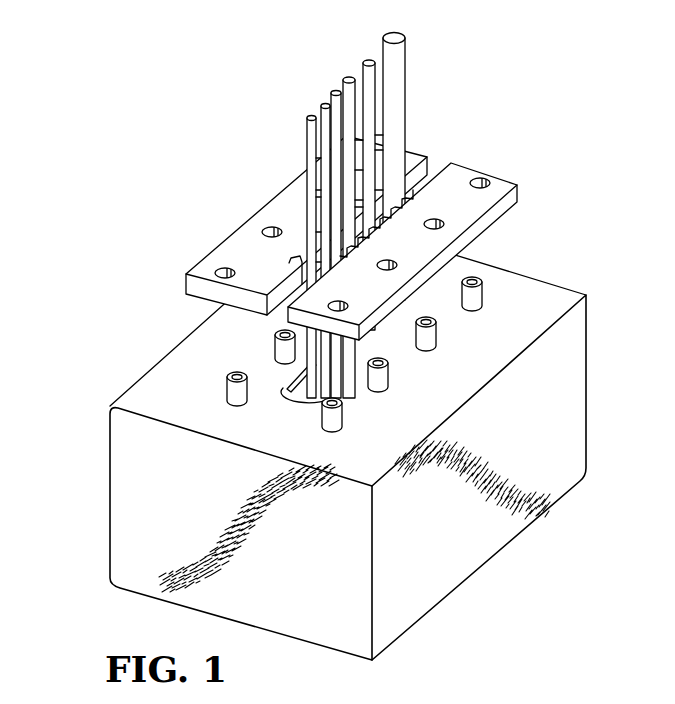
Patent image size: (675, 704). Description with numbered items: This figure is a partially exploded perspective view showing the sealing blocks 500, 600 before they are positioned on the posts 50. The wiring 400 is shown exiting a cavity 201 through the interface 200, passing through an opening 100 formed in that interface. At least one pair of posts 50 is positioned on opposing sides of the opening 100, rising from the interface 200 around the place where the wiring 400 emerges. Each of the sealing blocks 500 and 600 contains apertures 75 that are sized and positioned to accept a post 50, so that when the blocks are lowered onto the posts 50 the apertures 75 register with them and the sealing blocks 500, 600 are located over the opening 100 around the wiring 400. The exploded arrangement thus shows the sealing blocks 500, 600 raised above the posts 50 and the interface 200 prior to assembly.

The posts 50 is at (230, 384).
The apertures 75 is at (223, 268).
The opening 100 is at (297, 382).
The interface 200 is at (310, 437).
The cavity 201 is at (128, 460).
The wiring 400 is at (308, 104).
The sealing block 500 is at (497, 175).
The sealing block 600 is at (261, 201).